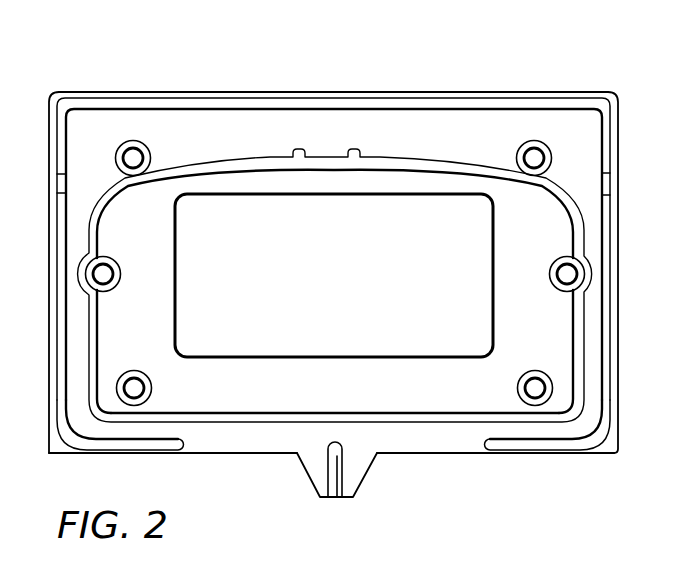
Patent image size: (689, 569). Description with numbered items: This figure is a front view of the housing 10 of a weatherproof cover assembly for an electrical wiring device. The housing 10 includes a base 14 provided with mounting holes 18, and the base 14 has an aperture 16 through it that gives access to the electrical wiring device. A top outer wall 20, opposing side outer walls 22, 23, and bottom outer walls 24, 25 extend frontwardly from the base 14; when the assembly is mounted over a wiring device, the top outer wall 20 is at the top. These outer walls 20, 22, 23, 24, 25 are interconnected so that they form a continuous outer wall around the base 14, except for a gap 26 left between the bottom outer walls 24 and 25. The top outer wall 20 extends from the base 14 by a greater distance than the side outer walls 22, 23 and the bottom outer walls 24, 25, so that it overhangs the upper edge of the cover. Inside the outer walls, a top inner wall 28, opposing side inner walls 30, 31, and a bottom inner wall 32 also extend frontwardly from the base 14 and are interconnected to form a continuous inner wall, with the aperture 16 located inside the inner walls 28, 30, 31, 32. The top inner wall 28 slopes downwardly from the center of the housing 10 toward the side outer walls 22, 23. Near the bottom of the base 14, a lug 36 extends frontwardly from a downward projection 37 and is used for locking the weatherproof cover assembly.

The housing 10 is at (178, 70).
The base 14 is at (157, 349).
The aperture 16 is at (377, 282).
The mounting holes 18 is at (149, 154).
The top outer wall 20 is at (332, 93).
The side outer wall 22 is at (58, 297).
The side outer wall 23 is at (611, 326).
The bottom outer wall 24 is at (148, 451).
The bottom outer wall 25 is at (538, 452).
The gap 26 is at (270, 446).
The top inner wall 28 is at (343, 167).
The side inner wall 30 is at (96, 331).
The side inner wall 31 is at (571, 315).
The bottom inner wall 32 is at (377, 413).
The lug 36 is at (343, 470).
The downward projection 37 is at (310, 478).